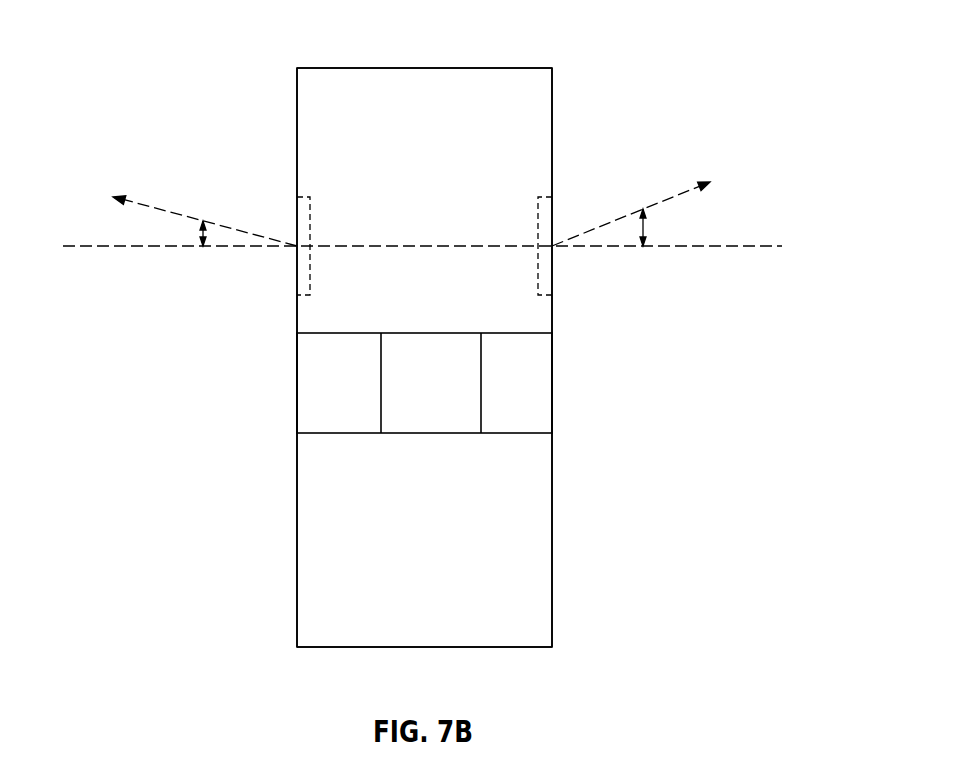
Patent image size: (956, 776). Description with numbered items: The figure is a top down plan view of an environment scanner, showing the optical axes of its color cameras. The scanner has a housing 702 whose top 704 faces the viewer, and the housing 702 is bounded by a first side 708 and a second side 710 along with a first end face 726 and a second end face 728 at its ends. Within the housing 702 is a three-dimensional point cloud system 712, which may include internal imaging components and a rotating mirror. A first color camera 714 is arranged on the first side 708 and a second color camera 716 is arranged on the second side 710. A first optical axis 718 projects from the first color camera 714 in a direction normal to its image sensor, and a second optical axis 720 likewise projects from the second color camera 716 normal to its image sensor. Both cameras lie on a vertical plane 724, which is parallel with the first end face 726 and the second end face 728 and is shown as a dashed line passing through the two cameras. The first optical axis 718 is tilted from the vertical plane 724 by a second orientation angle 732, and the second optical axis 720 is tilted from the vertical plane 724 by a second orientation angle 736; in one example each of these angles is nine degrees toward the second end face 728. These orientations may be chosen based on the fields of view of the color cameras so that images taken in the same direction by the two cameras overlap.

The housing 702 is at (420, 87).
The top 704 is at (520, 90).
The first side 708 is at (553, 595).
The second side 710 is at (297, 589).
The 3D point cloud system 712 is at (308, 408).
The first color camera 714 is at (552, 202).
The second color camera 716 is at (297, 220).
The first optical axis 718 is at (687, 190).
The second optical axis 720 is at (147, 205).
The vertical plane 724 is at (717, 248).
The first end face 726 is at (487, 648).
The second end face 728 is at (365, 67).
The second orientation angle 732 is at (646, 224).
The second orientation angle 736 is at (200, 232).